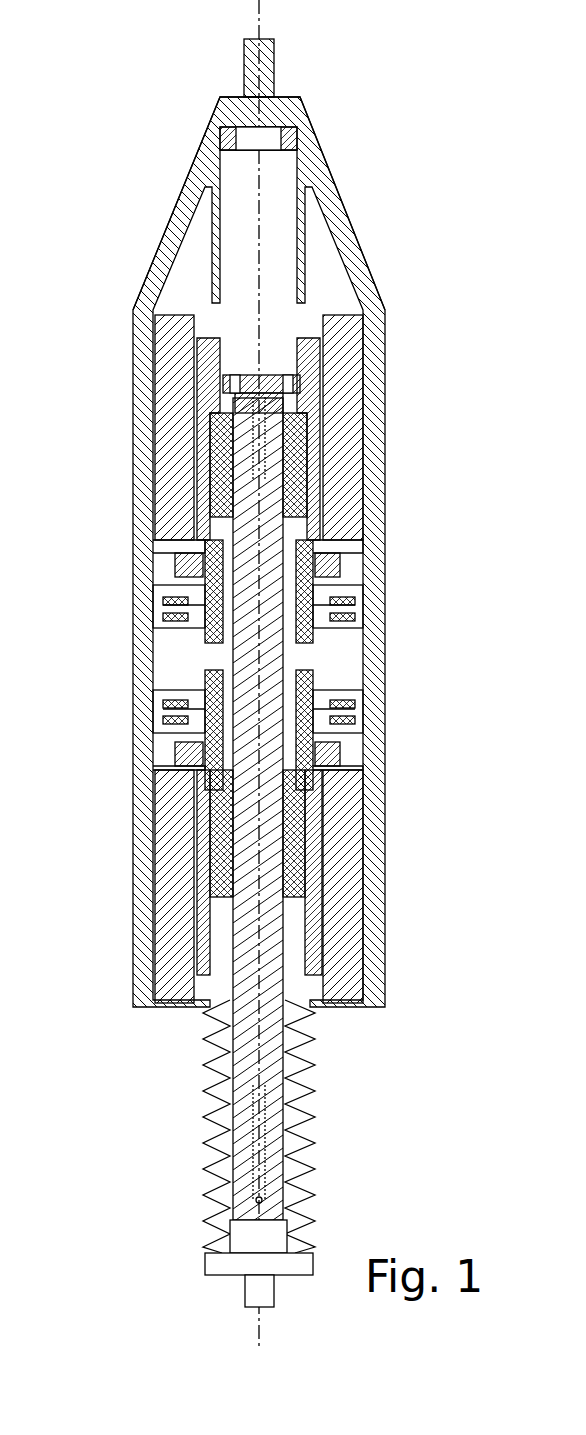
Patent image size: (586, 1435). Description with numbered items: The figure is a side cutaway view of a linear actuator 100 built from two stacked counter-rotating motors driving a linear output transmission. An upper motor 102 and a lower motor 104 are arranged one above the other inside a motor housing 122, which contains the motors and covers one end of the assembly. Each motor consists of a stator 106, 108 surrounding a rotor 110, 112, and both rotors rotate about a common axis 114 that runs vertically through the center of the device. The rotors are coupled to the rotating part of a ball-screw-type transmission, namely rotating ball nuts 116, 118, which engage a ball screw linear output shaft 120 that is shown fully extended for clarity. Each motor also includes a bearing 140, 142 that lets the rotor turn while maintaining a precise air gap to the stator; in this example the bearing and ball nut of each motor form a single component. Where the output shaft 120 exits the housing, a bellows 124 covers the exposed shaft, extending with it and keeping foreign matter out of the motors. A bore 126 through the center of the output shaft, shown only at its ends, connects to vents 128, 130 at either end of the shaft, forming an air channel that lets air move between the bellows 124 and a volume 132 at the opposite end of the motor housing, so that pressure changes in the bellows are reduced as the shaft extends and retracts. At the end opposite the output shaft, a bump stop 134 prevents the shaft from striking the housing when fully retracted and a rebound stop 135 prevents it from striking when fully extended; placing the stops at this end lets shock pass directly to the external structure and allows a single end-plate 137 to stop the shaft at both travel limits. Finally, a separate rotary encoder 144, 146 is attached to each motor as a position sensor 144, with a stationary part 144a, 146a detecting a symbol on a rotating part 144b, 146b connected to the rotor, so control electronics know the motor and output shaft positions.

The linear actuator 100 is at (133, 192).
The upper motor 102 is at (127, 313).
The lower motor 104 is at (120, 770).
The stator 106 is at (348, 413).
The stator 108 is at (355, 938).
The rotor 110 is at (313, 505).
The rotor 112 is at (315, 815).
The common axis 114 is at (265, 28).
The ball nut 116 is at (302, 457).
The ball nut 118 is at (295, 868).
The ball screw linear output shaft 120 is at (270, 1068).
The motor housing 122 is at (143, 680).
The bellows 124 is at (212, 1063).
The bore 126 is at (255, 470).
The vent 128 is at (255, 1200).
The vent 130 is at (247, 418).
The volume 132 is at (333, 272).
The bump stop 134 is at (285, 148).
The rebound stop 135 is at (286, 382).
The end-plate 137 is at (232, 376).
The bearing 140 is at (330, 565).
The bearing 142 is at (333, 755).
The rotary encoder 144 is at (462, 590).
The stationary part 144a is at (345, 601).
The rotating part 144b is at (325, 622).
The rotary encoder 146 is at (475, 665).
The stationary part 146a is at (340, 713).
The rotating part 146b is at (325, 705).